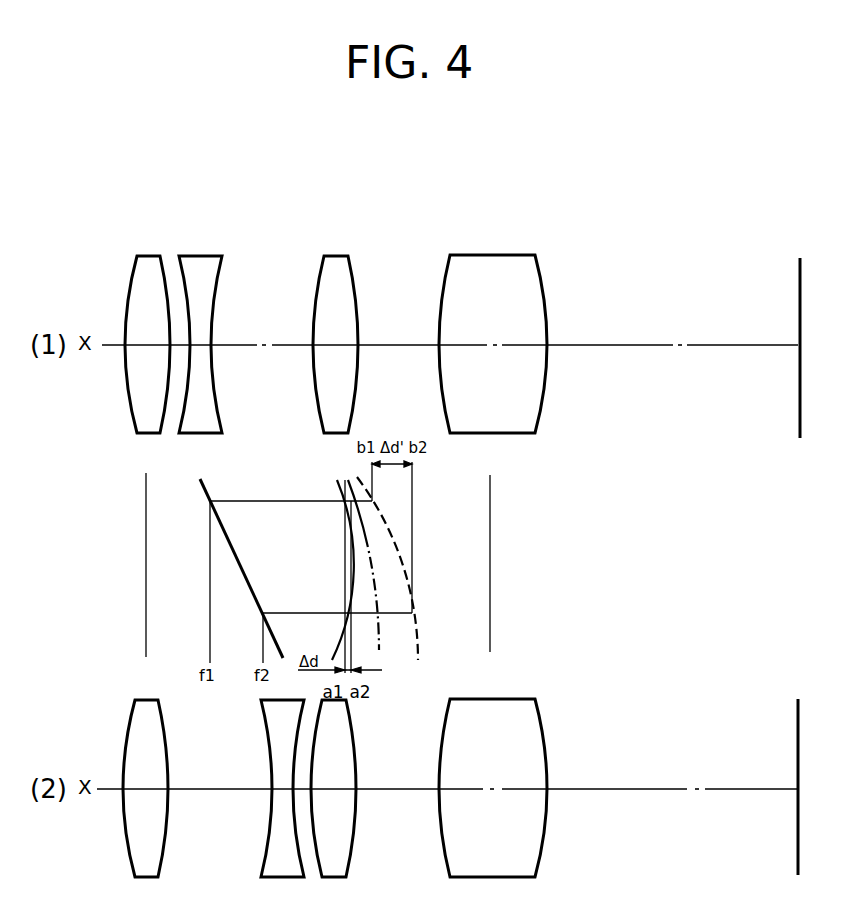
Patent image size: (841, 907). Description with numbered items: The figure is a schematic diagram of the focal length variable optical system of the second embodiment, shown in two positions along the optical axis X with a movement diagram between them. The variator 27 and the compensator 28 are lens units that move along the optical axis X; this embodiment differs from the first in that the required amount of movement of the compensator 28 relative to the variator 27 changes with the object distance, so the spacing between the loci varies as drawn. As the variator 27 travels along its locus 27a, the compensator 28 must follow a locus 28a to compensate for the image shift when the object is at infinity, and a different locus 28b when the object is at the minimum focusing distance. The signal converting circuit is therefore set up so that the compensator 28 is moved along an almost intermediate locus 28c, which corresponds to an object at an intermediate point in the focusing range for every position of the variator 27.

The variator 27 is at (197, 254).
The compensator 28 is at (336, 254).
The locus of the variator 27a is at (203, 481).
The locus of the compensator for an object at infinity 28a is at (346, 557).
The locus of the compensator for an object at the minimum distance 28b is at (384, 519).
The intermediate locus of the compensator 28c is at (376, 566).